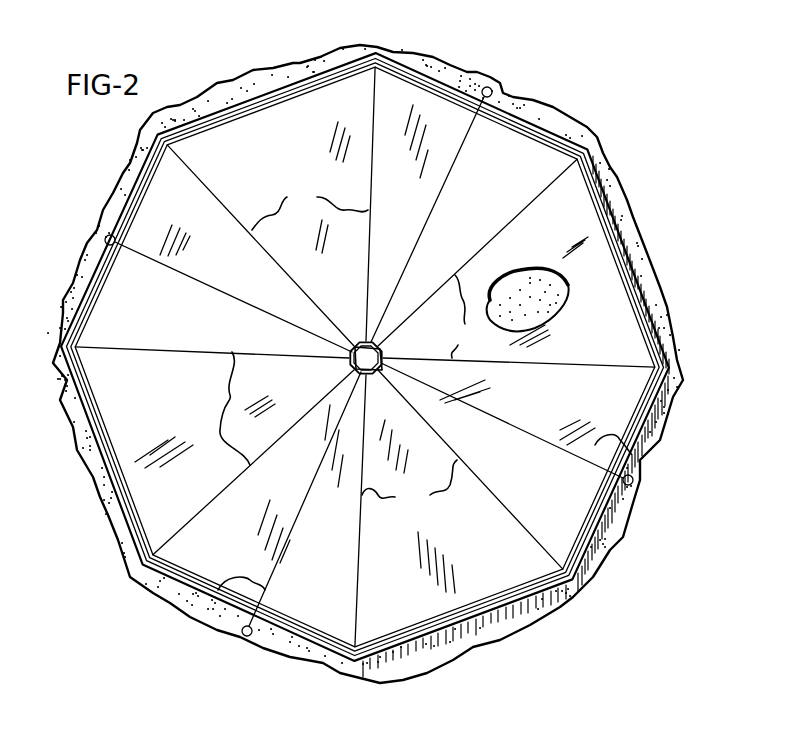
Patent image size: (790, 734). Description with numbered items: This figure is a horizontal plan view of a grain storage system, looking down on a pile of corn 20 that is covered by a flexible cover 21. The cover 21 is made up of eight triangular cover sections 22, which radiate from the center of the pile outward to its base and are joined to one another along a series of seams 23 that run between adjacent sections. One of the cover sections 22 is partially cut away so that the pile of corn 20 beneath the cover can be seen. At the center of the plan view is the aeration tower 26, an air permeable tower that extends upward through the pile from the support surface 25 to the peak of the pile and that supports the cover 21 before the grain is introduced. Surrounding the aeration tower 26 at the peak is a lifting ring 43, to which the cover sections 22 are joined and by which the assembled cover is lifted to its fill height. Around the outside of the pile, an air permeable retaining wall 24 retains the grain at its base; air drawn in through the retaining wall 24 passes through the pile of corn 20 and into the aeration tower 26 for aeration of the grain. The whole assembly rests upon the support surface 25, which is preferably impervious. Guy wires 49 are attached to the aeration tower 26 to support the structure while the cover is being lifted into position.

The pile of corn 20 is at (553, 267).
The flexible cover 21 is at (503, 152).
The cover sections 22 is at (280, 157).
The seams 23 is at (339, 348).
The retaining wall 24 is at (612, 198).
The support surface 25 is at (140, 193).
The aeration tower 26 is at (384, 350).
The lifting ring 43 is at (362, 337).
The guy wires 49 is at (220, 587).